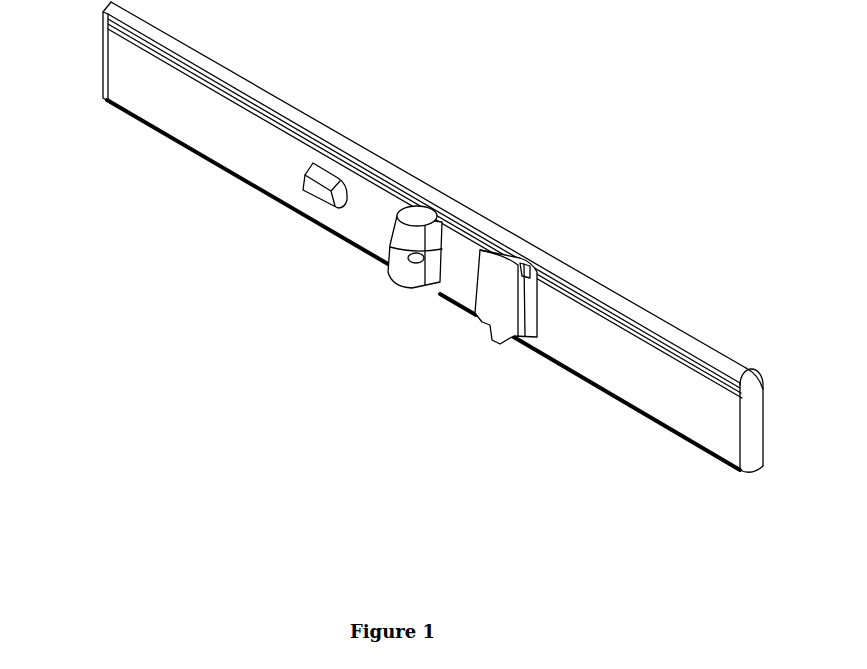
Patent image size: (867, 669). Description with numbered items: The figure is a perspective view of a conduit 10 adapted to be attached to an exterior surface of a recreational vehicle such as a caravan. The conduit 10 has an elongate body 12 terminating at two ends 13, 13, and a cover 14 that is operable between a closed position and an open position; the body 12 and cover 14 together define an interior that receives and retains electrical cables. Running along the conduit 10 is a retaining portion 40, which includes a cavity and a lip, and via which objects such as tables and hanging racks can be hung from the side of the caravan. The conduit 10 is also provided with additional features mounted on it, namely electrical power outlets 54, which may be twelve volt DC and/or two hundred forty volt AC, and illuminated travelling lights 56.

The conduit 10 is at (447, 166).
The body 12 is at (272, 86).
The ends 13 is at (100, 100).
The cover 14 is at (236, 152).
The retaining portion 40 is at (652, 327).
The electrical power outlets 54 is at (390, 284).
The illuminated travelling lights 56 is at (313, 198).